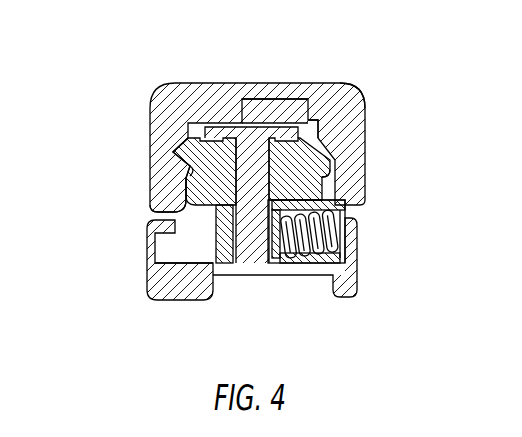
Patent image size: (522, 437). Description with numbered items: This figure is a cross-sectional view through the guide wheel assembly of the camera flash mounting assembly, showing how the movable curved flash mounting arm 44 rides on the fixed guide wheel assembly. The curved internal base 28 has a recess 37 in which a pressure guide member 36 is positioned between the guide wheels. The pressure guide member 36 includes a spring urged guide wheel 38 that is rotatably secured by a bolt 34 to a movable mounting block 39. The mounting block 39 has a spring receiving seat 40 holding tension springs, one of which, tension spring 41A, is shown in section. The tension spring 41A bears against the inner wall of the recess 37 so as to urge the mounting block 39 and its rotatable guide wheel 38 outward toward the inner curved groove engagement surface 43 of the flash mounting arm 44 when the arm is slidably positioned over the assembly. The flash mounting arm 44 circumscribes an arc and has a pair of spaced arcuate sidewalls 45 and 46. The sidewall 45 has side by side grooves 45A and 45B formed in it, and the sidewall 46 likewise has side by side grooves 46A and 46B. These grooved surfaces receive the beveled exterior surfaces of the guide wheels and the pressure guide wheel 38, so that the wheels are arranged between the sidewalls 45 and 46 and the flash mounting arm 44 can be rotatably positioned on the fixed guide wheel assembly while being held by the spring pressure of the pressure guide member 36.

The curved internal base 28 is at (178, 290).
The bolt 34 is at (297, 97).
The pressure guide member 36 is at (366, 96).
The recess 37 is at (160, 243).
The spring urged guide wheel 38 is at (312, 181).
The movable mounting block 39 is at (200, 260).
The spring receiving seat 40 is at (273, 263).
The tension spring 41A is at (344, 238).
The inner curved groove engagement surface 43 is at (175, 153).
The flash mounting arm 44 is at (356, 82).
The arcuate sidewall 45 is at (162, 136).
The groove 45A is at (186, 172).
The groove 45B is at (172, 206).
The arcuate sidewall 46 is at (340, 165).
The groove 46A is at (328, 124).
The groove 46B is at (356, 206).